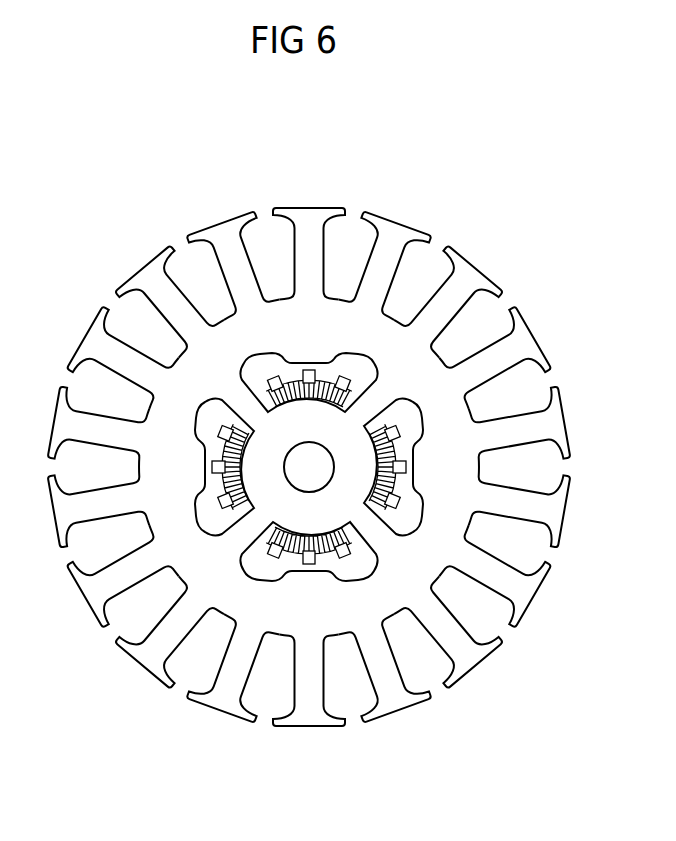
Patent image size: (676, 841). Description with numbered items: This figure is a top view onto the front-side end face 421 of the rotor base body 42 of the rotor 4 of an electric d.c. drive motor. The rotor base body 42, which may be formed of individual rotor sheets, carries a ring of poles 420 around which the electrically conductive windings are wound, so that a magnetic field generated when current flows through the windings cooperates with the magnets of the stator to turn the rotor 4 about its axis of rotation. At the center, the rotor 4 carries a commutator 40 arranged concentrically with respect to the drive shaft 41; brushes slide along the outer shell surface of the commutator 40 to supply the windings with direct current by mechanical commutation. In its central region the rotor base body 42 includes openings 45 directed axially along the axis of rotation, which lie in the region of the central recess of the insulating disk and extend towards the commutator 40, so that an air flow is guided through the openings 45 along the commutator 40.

The rotor 4 is at (134, 701).
The commutator 40 is at (263, 390).
The drive shaft 41 is at (310, 460).
The rotor base body 42 is at (442, 543).
The poles 420 is at (392, 695).
The front-side end face 421 is at (312, 315).
The openings 45 is at (353, 372).